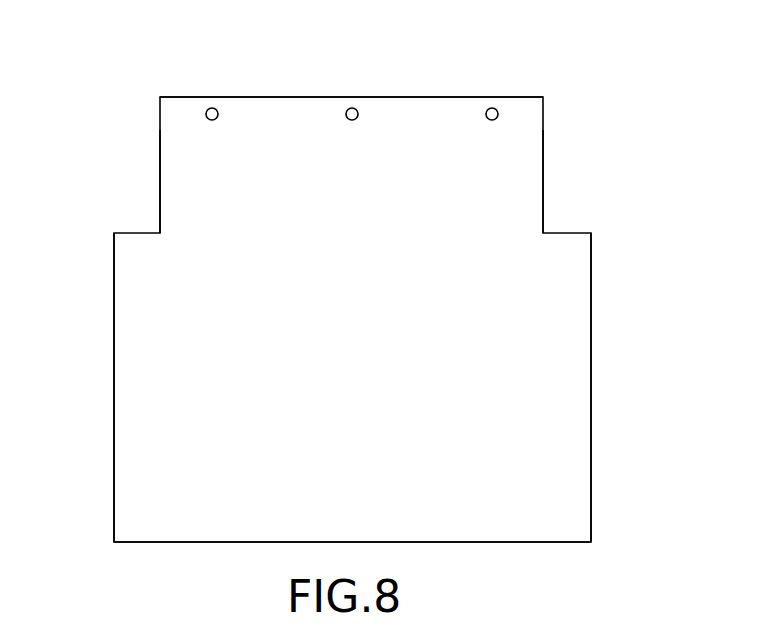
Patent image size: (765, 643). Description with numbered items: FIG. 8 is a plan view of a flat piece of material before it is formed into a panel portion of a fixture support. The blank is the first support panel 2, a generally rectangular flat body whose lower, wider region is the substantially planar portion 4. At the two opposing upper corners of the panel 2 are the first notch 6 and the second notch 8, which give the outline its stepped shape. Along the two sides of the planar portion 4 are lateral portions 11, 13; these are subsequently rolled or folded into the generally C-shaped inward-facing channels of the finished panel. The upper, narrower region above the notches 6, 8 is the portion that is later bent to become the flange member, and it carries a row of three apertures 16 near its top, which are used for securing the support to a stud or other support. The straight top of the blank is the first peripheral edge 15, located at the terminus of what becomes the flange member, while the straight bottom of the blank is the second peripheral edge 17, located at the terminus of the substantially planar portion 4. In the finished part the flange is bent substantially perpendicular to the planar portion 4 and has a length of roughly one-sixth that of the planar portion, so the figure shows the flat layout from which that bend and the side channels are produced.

The first support panel 2 is at (369, 323).
The planar portion 4 is at (150, 370).
The first notch 6 is at (150, 169).
The second notch 8 is at (553, 164).
The lateral portion 11 is at (120, 467).
The lateral portion 13 is at (591, 405).
The first peripheral edge 15 is at (280, 97).
The apertures 16 is at (215, 108).
The second peripheral edge 17 is at (513, 542).